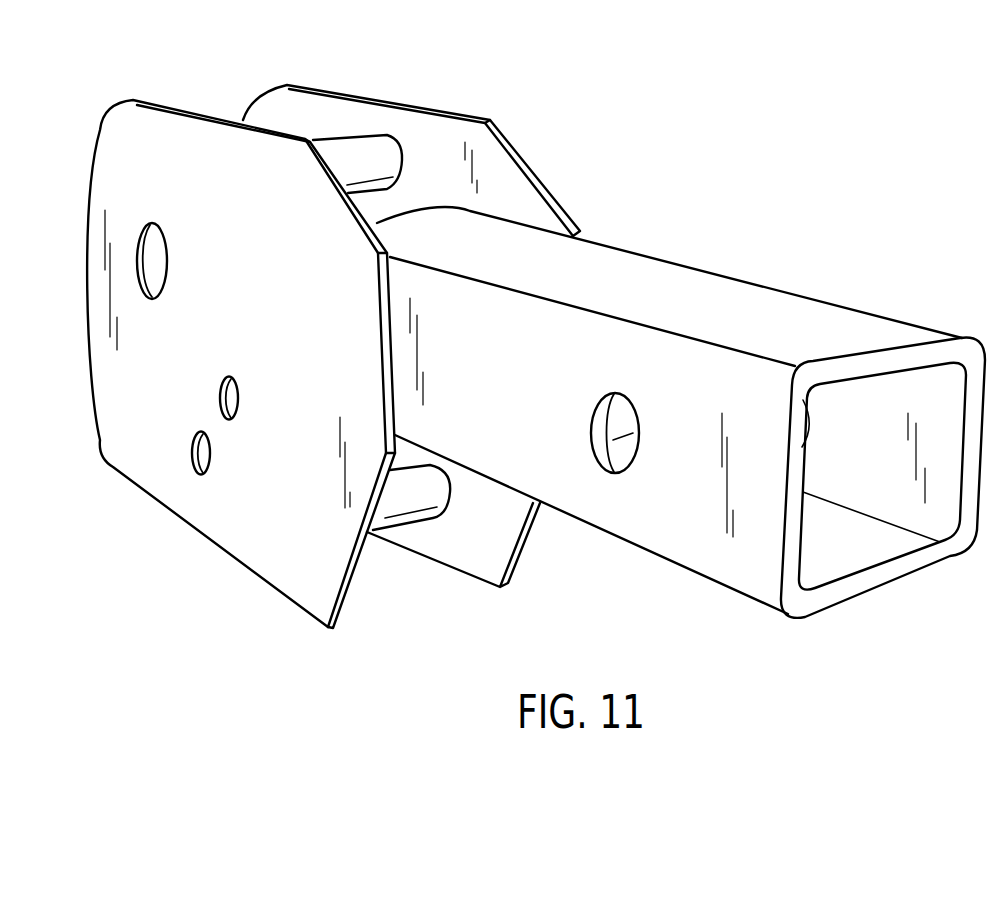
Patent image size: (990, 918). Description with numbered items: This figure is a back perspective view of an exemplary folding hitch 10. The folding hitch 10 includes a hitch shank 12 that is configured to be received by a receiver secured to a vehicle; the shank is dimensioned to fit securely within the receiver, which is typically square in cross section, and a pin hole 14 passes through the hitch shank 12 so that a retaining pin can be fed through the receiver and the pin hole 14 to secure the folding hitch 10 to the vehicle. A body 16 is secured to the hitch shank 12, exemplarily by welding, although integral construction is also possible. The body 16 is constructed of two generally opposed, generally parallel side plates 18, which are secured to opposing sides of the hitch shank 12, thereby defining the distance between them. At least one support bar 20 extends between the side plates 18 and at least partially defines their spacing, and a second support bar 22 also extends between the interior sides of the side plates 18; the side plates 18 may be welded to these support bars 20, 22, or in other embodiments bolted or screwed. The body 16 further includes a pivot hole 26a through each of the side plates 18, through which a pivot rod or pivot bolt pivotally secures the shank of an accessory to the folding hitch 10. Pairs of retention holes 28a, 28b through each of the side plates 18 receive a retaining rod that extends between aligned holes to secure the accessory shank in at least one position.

The folding hitch 10 is at (754, 127).
The hitch shank 12 is at (787, 317).
The pin hole 14 is at (608, 458).
The body 16 is at (101, 140).
The side plates 18 is at (508, 185).
The support bar 20 is at (358, 150).
The second support bar 22 is at (390, 510).
The pivot hole 26a is at (159, 272).
The retention hole 28a is at (205, 457).
The retention hole 28b is at (235, 397).